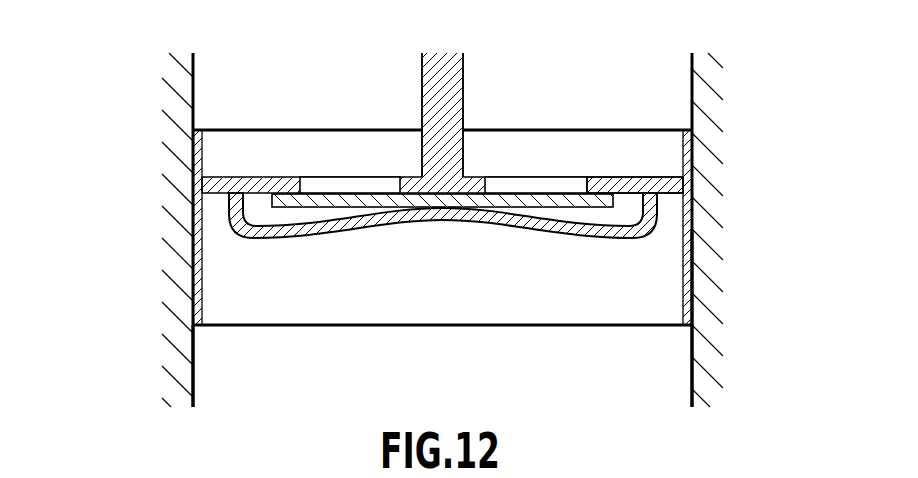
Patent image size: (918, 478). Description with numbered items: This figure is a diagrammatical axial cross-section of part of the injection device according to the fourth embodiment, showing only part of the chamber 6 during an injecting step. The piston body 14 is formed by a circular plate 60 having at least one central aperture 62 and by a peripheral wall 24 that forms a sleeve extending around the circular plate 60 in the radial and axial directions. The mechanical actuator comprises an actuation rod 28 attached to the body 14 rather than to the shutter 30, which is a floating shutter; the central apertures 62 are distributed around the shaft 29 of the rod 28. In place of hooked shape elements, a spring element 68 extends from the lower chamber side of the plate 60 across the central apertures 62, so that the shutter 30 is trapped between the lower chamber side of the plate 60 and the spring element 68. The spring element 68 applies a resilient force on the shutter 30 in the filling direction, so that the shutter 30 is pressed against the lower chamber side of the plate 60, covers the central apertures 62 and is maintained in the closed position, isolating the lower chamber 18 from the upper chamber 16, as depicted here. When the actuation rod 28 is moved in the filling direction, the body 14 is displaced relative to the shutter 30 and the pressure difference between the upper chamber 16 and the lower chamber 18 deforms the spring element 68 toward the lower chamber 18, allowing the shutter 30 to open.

The chamber 6 is at (667, 93).
The body 14 is at (257, 177).
The upper chamber 16 is at (212, 80).
The lower chamber 18 is at (232, 363).
The peripheral wall 24 is at (688, 263).
The actuation rod 28 is at (463, 59).
The shaft 29 is at (425, 62).
The shutter 30 is at (335, 218).
The circular plate 60 is at (617, 185).
The central aperture 62 is at (317, 185).
The spring element 68 is at (553, 225).